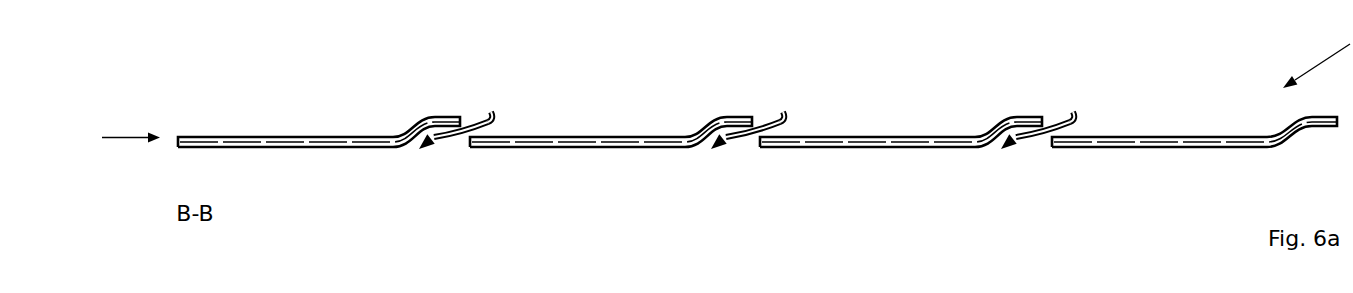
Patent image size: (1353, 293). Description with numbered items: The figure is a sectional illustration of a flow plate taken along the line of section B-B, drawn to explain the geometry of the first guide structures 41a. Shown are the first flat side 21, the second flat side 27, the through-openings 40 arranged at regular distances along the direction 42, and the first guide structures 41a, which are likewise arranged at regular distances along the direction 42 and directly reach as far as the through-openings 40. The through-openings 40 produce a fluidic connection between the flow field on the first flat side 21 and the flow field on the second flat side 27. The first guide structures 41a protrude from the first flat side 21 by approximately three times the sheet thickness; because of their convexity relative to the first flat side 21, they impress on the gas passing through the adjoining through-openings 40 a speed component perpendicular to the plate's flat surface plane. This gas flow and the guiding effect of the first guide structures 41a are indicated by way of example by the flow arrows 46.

The first flat side 21 is at (280, 137).
The second flat side 27 is at (243, 145).
The first guide structures 41a is at (439, 116).
The flow arrows 46 is at (491, 112).
The through-openings 40 is at (451, 143).
The direction 42 is at (118, 138).